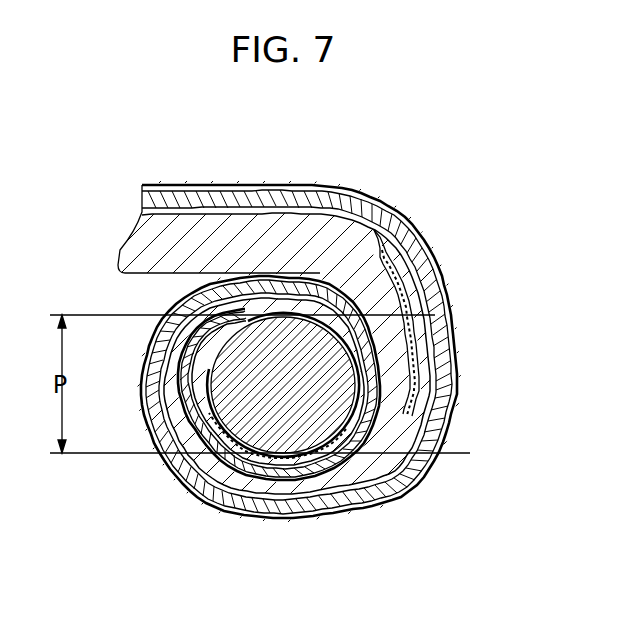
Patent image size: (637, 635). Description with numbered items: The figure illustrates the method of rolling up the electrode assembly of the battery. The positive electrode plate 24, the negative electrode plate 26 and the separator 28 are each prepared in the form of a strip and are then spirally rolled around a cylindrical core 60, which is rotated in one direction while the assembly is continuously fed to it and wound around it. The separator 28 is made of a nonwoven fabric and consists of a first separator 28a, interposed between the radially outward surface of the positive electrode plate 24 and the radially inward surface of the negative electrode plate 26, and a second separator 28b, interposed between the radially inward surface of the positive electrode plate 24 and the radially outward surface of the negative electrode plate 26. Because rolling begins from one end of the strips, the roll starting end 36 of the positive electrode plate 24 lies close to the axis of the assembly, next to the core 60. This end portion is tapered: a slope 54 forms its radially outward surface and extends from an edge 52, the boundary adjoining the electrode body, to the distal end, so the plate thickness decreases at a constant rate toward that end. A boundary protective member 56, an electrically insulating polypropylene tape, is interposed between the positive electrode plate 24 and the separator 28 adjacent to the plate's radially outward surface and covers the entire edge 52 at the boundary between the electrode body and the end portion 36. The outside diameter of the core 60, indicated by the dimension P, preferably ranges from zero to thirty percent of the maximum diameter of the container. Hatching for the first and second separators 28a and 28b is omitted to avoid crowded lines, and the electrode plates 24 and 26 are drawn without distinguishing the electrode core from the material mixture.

The positive electrode plate 24 is at (163, 242).
The negative electrode plate 26 is at (248, 200).
The separator 28 is at (322, 320).
The first separator 28a is at (201, 214).
The second separator 28b is at (297, 187).
The roll starting end 36 is at (452, 392).
The edge 52 is at (412, 313).
The slope 54 is at (397, 365).
The boundary protective member 56 is at (410, 288).
The core 60 is at (297, 427).